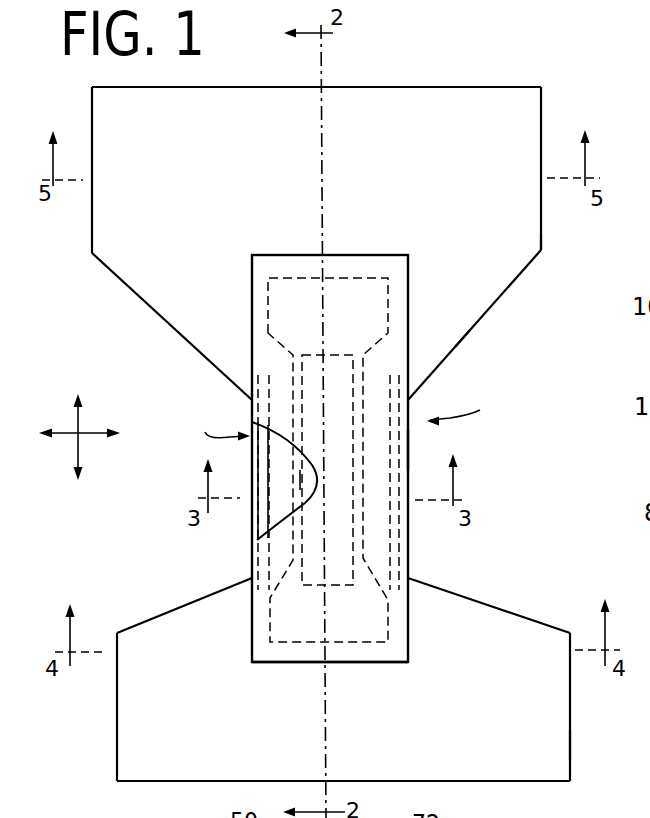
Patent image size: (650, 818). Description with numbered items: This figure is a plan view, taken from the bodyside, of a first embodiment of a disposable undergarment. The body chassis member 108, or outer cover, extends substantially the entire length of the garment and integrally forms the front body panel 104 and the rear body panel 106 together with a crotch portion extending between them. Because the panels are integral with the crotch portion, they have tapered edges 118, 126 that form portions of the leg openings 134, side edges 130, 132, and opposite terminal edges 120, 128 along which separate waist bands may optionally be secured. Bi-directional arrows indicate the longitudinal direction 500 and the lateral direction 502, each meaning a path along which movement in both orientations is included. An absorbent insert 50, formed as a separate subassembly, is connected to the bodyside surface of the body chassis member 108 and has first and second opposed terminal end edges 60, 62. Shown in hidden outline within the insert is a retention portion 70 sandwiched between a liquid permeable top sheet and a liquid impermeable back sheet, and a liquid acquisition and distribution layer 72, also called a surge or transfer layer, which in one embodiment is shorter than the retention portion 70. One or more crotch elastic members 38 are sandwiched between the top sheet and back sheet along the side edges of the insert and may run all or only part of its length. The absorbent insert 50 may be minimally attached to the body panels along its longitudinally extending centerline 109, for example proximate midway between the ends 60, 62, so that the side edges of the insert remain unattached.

The terminal edge 128 is at (392, 87).
The side edge 132 is at (97, 210).
The rear body panel 106 is at (516, 240).
The tapered edge 126 is at (145, 303).
The body chassis member 108 is at (448, 332).
The terminal end edge 62 is at (375, 255).
The terminal end edge 60 is at (283, 662).
The absorbent insert 50 is at (408, 450).
The retention portion 70 is at (363, 618).
The liquid acquisition and distribution layer 72 is at (300, 480).
The leg opening 134 is at (351, 419).
The crotch elastic member 38 is at (268, 513).
The tapered edge 118 is at (165, 612).
The side edge 130 is at (117, 697).
The front body panel 104 is at (537, 744).
The terminal edge 120 is at (485, 781).
The longitudinally extending centerline 109 is at (328, 757).
The longitudinal direction 500 is at (80, 420).
The lateral direction 502 is at (95, 438).